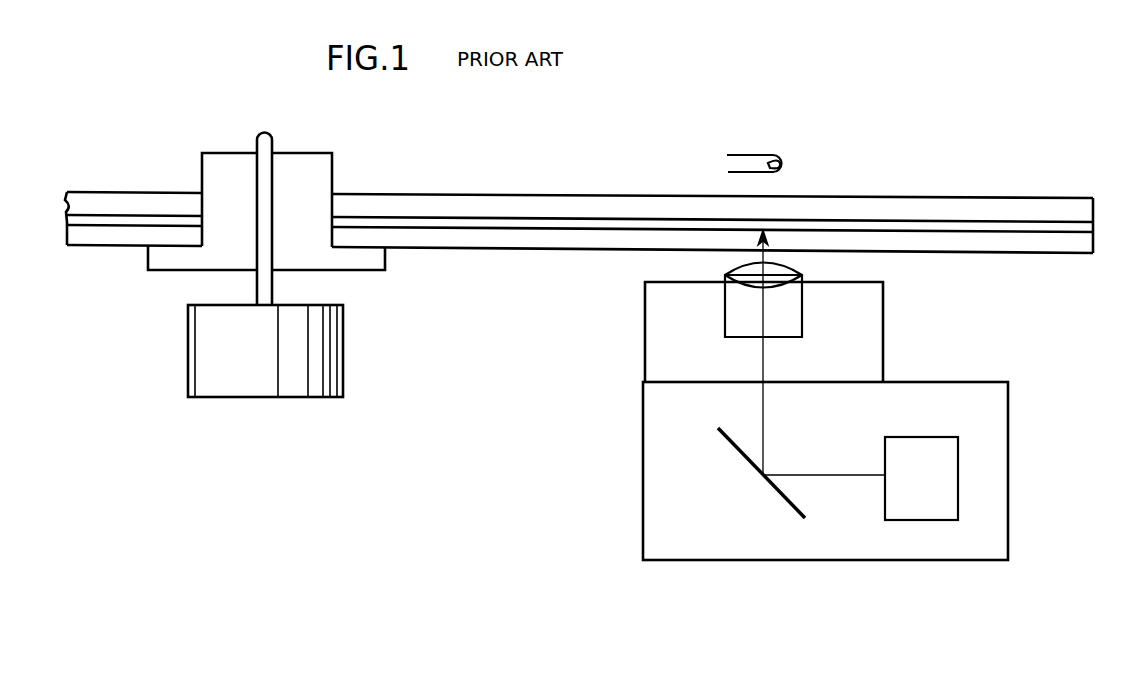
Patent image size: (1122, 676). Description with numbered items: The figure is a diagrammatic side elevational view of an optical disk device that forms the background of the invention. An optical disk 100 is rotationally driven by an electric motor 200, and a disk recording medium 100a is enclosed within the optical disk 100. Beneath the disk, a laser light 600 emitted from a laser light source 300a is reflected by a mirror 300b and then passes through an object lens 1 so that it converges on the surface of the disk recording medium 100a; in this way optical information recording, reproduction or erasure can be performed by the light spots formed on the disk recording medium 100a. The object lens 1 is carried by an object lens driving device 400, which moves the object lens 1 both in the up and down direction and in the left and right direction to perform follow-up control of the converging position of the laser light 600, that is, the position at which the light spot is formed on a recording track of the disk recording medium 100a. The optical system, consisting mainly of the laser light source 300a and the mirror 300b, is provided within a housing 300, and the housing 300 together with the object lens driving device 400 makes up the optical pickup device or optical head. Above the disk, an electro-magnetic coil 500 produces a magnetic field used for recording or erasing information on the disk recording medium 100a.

The object lens 1 is at (733, 270).
The optical disk 100 is at (808, 198).
The disk recording medium 100a is at (863, 222).
The electric motor 200 is at (343, 353).
The housing 300 is at (980, 350).
The laser light source 300a is at (925, 520).
The mirror 300b is at (777, 493).
The object lens driving device 400 is at (883, 317).
The electro-magnetic coil 500 is at (745, 152).
The laser light 600 is at (764, 407).